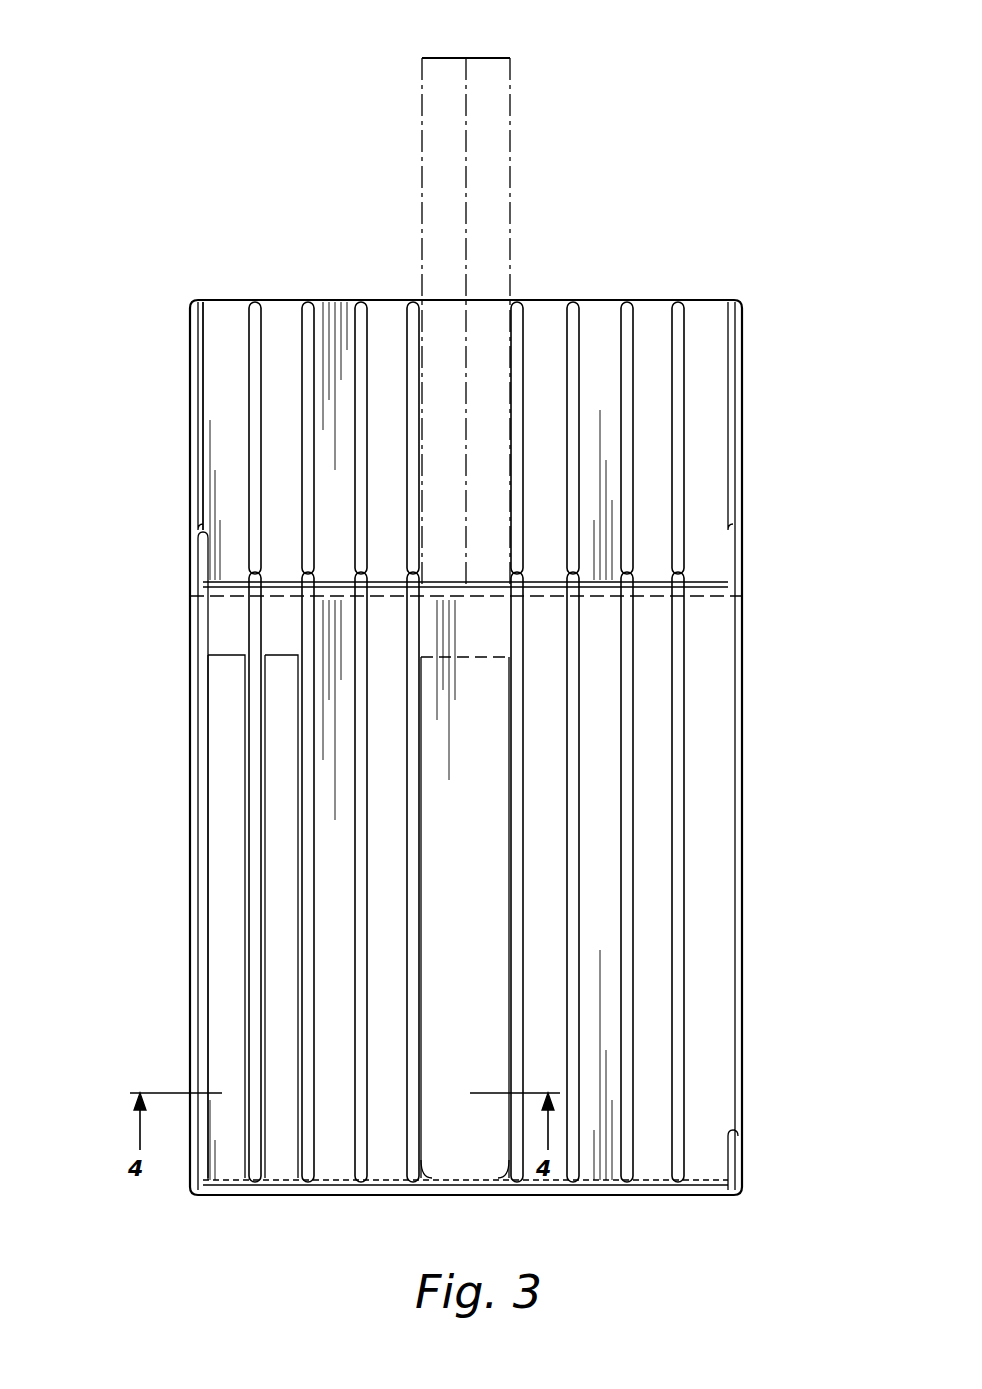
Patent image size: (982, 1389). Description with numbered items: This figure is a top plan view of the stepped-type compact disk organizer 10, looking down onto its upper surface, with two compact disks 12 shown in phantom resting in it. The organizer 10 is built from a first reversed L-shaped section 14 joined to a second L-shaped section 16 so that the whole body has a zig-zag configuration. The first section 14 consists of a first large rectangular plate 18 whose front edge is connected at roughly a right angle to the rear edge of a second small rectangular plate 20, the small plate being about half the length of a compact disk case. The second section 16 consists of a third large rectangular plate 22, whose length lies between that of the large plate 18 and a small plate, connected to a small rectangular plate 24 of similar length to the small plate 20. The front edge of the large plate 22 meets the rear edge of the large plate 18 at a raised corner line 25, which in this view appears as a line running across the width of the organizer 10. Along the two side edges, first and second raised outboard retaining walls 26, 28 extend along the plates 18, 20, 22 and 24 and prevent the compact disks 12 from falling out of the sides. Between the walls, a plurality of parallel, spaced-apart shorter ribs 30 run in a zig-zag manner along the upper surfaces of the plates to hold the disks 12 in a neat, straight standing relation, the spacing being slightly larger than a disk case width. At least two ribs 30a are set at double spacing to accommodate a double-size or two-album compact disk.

The compact disk organizer 10 is at (676, 280).
The compact disks 12 is at (480, 58).
The first reversed L-shaped section 14 is at (170, 940).
The second L-shaped section 16 is at (170, 448).
The first large rectangular plate 18 is at (388, 1132).
The second small rectangular plate 20 is at (343, 1196).
The third large rectangular plate 22 is at (693, 598).
The small rectangular plate 24 is at (232, 320).
The raised corner line 25 is at (710, 582).
The first raised outboard retaining wall 26 is at (190, 808).
The second raised outboard retaining wall 28 is at (742, 812).
The ribs 30 is at (635, 990).
The double-spaced ribs 30a is at (507, 1158).